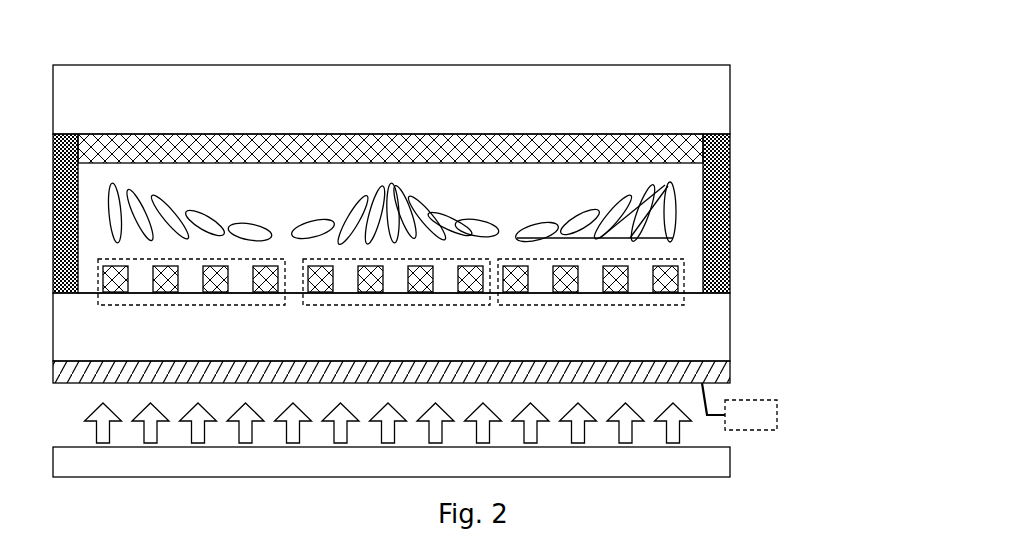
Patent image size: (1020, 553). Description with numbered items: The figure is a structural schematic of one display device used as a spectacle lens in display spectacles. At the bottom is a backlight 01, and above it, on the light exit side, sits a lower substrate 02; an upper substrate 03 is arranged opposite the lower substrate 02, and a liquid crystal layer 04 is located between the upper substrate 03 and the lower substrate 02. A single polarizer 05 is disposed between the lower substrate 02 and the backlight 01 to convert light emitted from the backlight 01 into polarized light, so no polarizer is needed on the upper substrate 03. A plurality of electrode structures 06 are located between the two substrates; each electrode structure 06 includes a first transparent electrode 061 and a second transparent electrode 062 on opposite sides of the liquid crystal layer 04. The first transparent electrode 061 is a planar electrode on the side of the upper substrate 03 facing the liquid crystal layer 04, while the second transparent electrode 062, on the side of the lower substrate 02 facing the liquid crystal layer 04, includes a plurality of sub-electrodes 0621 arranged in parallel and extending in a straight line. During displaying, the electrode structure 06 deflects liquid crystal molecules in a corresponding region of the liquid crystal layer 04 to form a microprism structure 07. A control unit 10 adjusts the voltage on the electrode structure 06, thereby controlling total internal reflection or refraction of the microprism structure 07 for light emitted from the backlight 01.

The backlight 01 is at (678, 467).
The lower substrate 02 is at (678, 342).
The upper substrate 03 is at (675, 101).
The liquid crystal layer 04 is at (457, 133).
The polarizer 05 is at (730, 372).
The electrode structure 06 is at (478, 233).
The first transparent electrode 061 is at (730, 150).
The second transparent electrode 062 is at (461, 295).
The sub-electrode 0621 is at (683, 272).
The microprism structure 07 is at (630, 195).
The control unit 10 is at (777, 413).